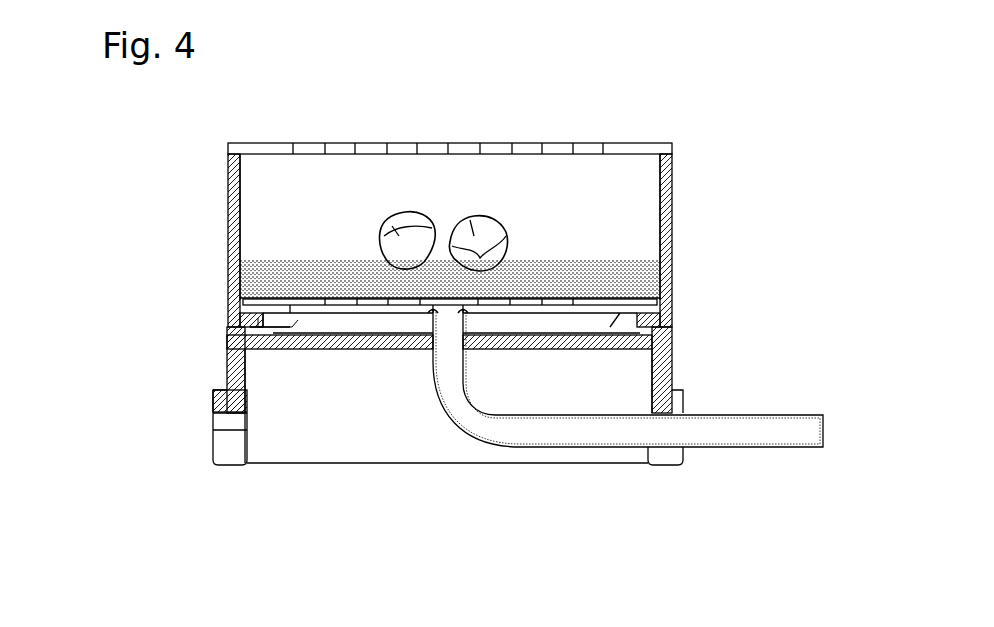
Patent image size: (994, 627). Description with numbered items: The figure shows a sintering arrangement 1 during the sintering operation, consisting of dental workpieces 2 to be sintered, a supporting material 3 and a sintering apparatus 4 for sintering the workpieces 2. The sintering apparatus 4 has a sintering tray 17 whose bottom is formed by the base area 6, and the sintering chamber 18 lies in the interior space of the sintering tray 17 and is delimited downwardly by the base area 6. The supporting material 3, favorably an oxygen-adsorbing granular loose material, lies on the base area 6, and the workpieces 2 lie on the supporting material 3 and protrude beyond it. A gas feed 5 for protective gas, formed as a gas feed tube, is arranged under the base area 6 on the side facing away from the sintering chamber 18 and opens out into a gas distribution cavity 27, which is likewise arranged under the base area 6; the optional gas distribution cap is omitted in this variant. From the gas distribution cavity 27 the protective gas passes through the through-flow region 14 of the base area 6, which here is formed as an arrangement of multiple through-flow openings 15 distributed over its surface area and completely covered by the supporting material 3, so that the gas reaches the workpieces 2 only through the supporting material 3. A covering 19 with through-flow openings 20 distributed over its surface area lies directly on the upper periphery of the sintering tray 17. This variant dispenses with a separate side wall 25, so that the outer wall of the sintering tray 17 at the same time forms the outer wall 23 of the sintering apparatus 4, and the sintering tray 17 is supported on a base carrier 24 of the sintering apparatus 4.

The arrangement 1 is at (712, 133).
The dental workpiece 2 is at (475, 245).
The supporting material 3 is at (647, 288).
The sintering apparatus 4 is at (677, 247).
The gas feed 5 is at (470, 420).
The base area 6 is at (445, 305).
The through-flow region 14 is at (458, 300).
The through-flow openings 15 is at (420, 303).
The sintering tray 17 is at (228, 247).
The sintering chamber 18 is at (635, 190).
The covering 19 is at (618, 150).
The through-flow openings 20 is at (603, 143).
The outer wall 23 is at (228, 188).
The base carrier 24 is at (220, 405).
The side wall 25 is at (654, 240).
The gas distribution cavity 27 is at (598, 316).